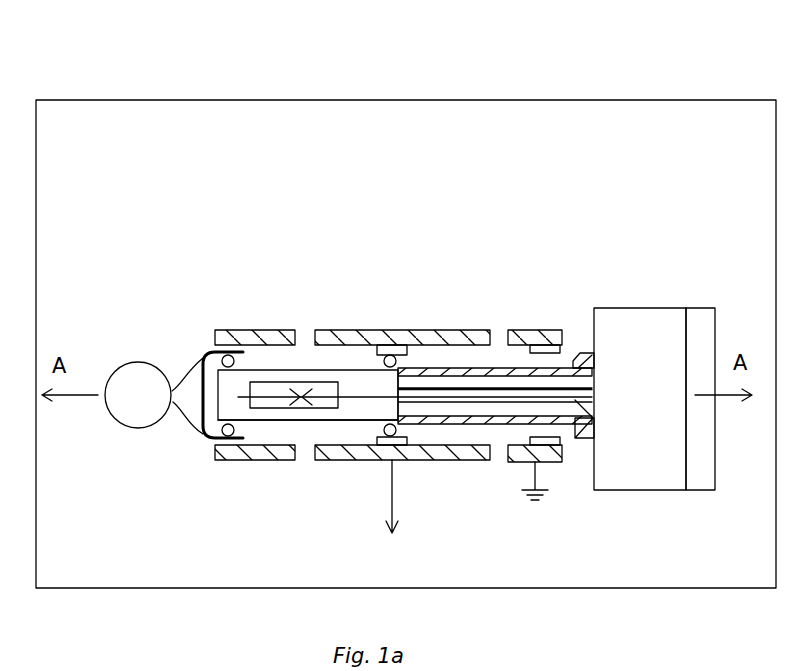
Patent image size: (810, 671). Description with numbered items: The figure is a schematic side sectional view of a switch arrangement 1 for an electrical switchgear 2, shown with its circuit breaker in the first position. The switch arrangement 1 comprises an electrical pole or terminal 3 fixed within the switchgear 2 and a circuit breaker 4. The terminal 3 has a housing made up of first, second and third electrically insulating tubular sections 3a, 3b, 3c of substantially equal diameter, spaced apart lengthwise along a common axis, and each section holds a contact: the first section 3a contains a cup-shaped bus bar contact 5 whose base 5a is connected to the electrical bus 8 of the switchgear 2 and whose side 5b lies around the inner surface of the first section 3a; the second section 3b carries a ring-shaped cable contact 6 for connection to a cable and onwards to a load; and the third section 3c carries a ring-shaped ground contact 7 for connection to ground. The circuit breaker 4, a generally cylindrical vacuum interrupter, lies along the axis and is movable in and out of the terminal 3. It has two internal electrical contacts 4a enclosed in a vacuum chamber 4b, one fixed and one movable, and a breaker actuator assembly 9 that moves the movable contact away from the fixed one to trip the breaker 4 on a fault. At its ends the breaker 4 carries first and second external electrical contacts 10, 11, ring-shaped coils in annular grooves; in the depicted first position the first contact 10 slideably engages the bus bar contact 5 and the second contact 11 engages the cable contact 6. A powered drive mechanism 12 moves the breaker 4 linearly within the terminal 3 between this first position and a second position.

The switch arrangement 1 is at (265, 203).
The electrical switchgear 2 is at (430, 100).
The electrical pole or terminal 3 is at (278, 490).
The first electrically insulating tubular section 3a is at (255, 330).
The second electrically insulating tubular section 3b is at (345, 330).
The third electrically insulating tubular section 3c is at (525, 330).
The circuit breaker 4 is at (370, 420).
The internal electrical contacts 4a is at (310, 420).
The vacuum chamber 4b is at (268, 330).
The bus bar contact 5 is at (200, 352).
The base 5a is at (188, 400).
The side 5b is at (205, 445).
The cable contact 6 is at (415, 330).
The ground contact 7 is at (572, 355).
The electrical bus 8 is at (135, 390).
The breaker actuator assembly 9 is at (597, 417).
The first external electrical contact 10 is at (232, 330).
The second external electrical contact 11 is at (395, 330).
The powered drive mechanism 12 is at (698, 468).